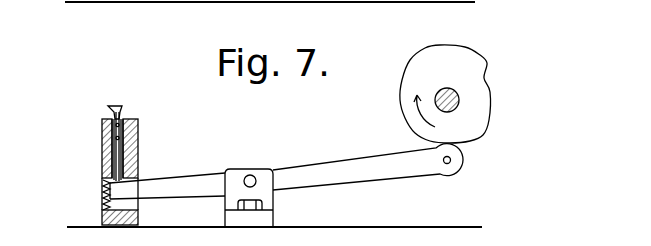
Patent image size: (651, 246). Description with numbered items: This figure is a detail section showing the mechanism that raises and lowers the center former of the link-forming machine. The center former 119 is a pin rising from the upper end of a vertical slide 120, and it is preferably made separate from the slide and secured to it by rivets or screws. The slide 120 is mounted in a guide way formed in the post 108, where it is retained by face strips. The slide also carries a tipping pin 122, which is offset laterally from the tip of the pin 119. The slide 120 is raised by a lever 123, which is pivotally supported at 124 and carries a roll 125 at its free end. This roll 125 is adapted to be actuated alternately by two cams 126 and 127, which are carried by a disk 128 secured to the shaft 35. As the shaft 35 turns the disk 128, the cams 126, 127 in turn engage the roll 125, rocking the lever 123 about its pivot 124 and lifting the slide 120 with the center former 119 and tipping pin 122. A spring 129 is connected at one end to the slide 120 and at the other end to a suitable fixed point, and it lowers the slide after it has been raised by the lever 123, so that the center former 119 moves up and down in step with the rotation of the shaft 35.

The shaft 35 is at (448, 97).
The post 108 is at (139, 150).
The center former 119 is at (122, 106).
The vertical slide 120 is at (138, 143).
The tipping pin 122 is at (108, 106).
The lever 123 is at (304, 173).
The pivot 124 is at (251, 180).
The roll 125 is at (464, 158).
The cam 126 is at (476, 52).
The cam 127 is at (489, 130).
The disk 128 is at (479, 90).
The spring 129 is at (103, 187).